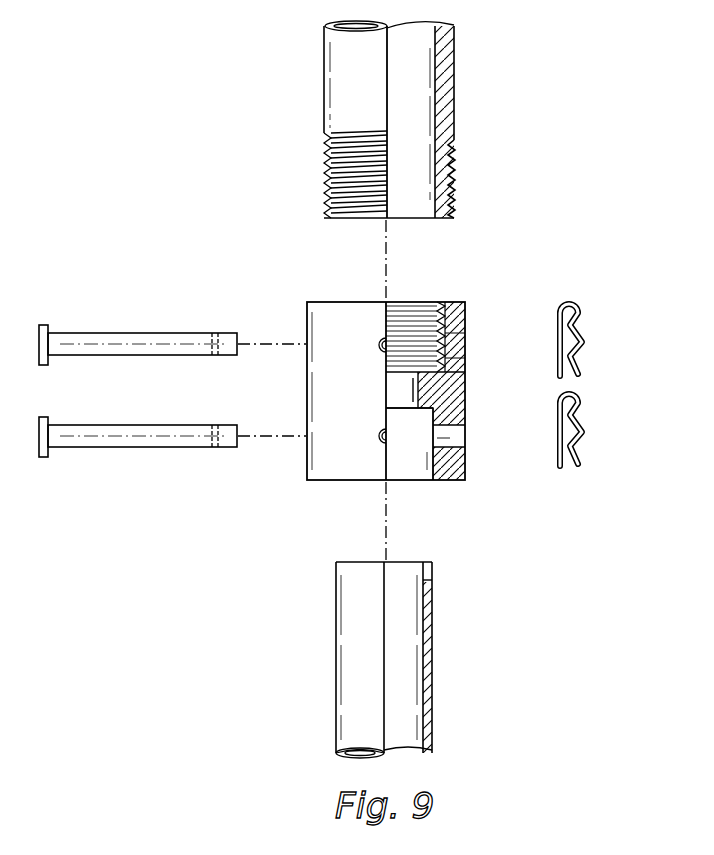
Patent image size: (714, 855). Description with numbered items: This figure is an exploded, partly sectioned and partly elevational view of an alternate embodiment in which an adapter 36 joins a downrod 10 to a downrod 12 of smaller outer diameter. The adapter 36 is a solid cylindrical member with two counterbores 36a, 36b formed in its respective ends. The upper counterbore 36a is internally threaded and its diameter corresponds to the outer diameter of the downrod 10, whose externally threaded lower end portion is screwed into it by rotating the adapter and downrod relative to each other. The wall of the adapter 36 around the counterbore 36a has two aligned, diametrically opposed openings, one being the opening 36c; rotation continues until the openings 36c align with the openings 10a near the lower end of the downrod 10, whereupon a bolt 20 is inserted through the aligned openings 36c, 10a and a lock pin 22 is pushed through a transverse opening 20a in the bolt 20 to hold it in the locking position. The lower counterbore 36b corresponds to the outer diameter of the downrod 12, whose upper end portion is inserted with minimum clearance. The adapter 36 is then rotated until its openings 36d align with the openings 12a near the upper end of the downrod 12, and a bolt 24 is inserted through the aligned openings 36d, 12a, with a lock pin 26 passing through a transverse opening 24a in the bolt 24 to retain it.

The downrod 10 is at (324, 80).
The transverse opening of downrod 10a is at (458, 172).
The downrod 12 is at (333, 672).
The transverse opening of downrod 12a is at (434, 585).
The bolt 20 is at (127, 333).
The transverse opening of bolt 20a is at (203, 333).
The lock pin 22 is at (586, 312).
The bolt 24 is at (127, 447).
The transverse opening of bolt 24a is at (203, 447).
The lock pin 26 is at (586, 404).
The adapter 36 is at (332, 296).
The counterbore 36a is at (408, 315).
The counterbore 36b is at (426, 468).
The opening of adapter wall 36c is at (466, 343).
The opening of adapter wall 36d is at (466, 438).